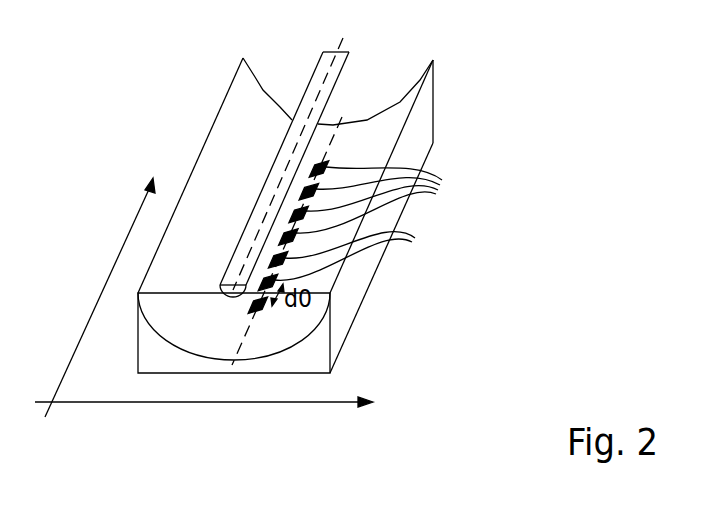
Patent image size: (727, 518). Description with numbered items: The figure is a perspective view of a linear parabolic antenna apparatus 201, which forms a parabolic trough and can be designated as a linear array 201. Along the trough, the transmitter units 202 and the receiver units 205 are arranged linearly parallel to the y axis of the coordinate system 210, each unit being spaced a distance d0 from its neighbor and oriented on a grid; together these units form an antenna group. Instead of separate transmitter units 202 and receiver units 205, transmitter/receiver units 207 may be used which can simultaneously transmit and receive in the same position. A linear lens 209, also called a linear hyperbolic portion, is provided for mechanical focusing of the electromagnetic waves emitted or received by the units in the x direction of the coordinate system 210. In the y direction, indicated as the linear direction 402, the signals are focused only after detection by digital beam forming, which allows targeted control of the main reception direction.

The linear parabolic antenna apparatus 201 is at (427, 165).
The linear lens 209 is at (347, 72).
The transmitter units 202 is at (409, 203).
The receiver units 205 is at (382, 276).
The transmitter/receiver units 207 is at (407, 223).
The linear direction 402 is at (247, 340).
The coordinate system 210 is at (87, 428).